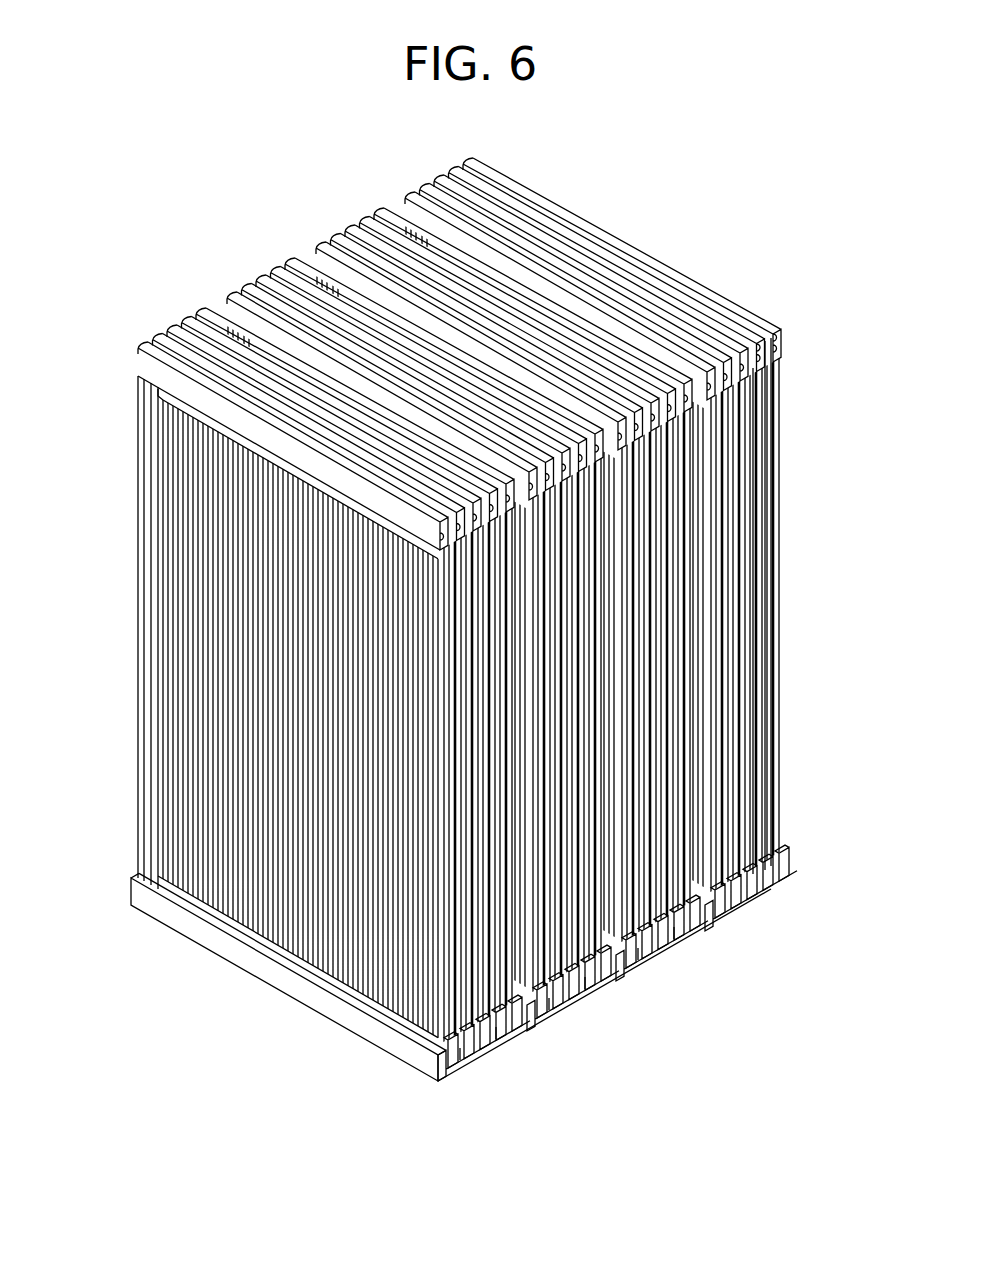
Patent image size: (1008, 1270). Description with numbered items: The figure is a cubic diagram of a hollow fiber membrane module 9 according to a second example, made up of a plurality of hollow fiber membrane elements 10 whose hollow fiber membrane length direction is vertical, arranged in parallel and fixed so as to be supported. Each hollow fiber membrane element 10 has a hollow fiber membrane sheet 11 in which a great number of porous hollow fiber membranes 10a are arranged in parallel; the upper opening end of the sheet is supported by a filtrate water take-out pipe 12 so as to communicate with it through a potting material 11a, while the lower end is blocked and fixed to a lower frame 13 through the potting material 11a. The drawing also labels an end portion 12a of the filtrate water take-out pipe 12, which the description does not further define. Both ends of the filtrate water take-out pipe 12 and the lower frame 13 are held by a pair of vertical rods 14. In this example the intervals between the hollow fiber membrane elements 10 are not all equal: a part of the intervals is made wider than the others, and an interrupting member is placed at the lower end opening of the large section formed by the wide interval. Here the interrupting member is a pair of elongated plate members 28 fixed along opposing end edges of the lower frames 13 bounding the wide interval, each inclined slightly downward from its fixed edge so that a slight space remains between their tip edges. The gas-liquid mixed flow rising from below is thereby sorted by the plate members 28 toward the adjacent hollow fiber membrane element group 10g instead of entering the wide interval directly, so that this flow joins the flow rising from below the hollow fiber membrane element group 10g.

The hollow fiber membrane module 9 is at (640, 196).
The hollow fiber membrane element 10 is at (752, 568).
The porous hollow fiber membrane 10a is at (162, 882).
The hollow fiber membrane element group 10g is at (462, 1083).
The hollow fiber membrane sheet 11 is at (266, 945).
The potting material 11a is at (150, 392).
The filtrate water take-out pipe 12 is at (219, 290).
The bar end notch 12a is at (766, 340).
The lower frame 13 is at (411, 1055).
The vertical rod 14 is at (128, 730).
The plate member 28 is at (505, 1040).